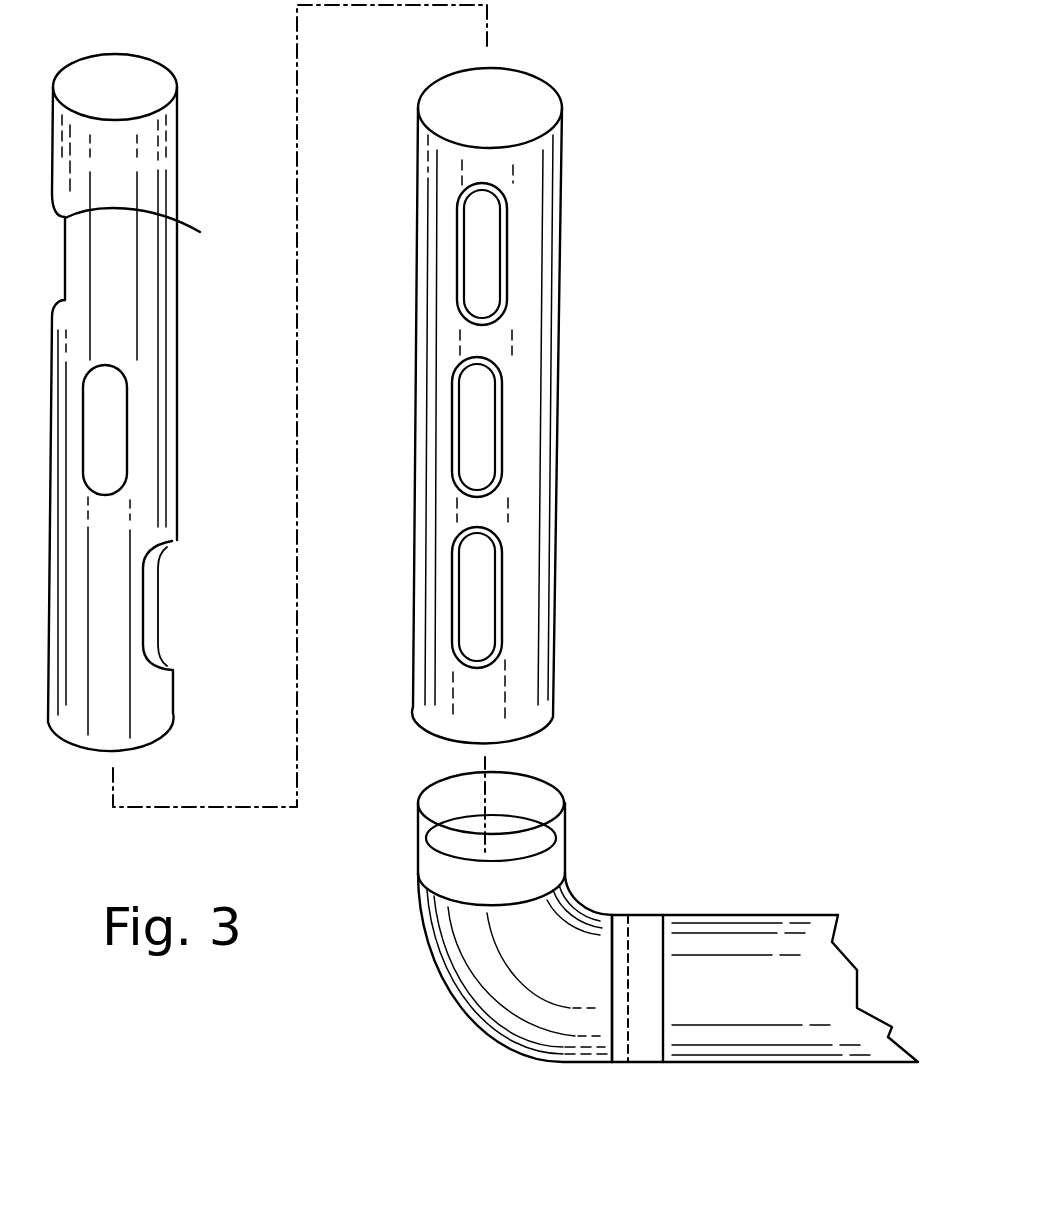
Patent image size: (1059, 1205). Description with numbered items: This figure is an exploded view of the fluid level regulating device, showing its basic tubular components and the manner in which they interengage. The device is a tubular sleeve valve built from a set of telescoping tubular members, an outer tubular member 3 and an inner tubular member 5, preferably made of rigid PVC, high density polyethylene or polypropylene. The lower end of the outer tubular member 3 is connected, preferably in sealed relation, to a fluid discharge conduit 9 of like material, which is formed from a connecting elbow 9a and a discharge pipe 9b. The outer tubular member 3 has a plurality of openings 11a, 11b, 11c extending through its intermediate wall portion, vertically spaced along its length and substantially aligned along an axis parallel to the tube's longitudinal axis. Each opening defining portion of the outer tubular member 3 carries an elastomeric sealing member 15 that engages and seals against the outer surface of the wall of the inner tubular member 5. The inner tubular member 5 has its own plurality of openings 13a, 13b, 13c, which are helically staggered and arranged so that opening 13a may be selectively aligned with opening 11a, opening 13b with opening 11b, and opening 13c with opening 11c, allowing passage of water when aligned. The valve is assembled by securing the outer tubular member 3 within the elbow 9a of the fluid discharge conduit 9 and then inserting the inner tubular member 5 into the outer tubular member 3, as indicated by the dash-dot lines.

The outer tubular member 3 is at (562, 292).
The inner tubular member 5 is at (177, 160).
The fluid discharge conduit 9 is at (668, 908).
The connecting elbow 9a is at (580, 897).
The discharge pipe 9b is at (813, 915).
The opening 11a is at (472, 265).
The opening 11b is at (475, 447).
The opening 11c is at (475, 630).
The opening 13a is at (200, 232).
The opening 13b is at (107, 418).
The opening 13c is at (152, 625).
The sealing member 15 is at (500, 218).